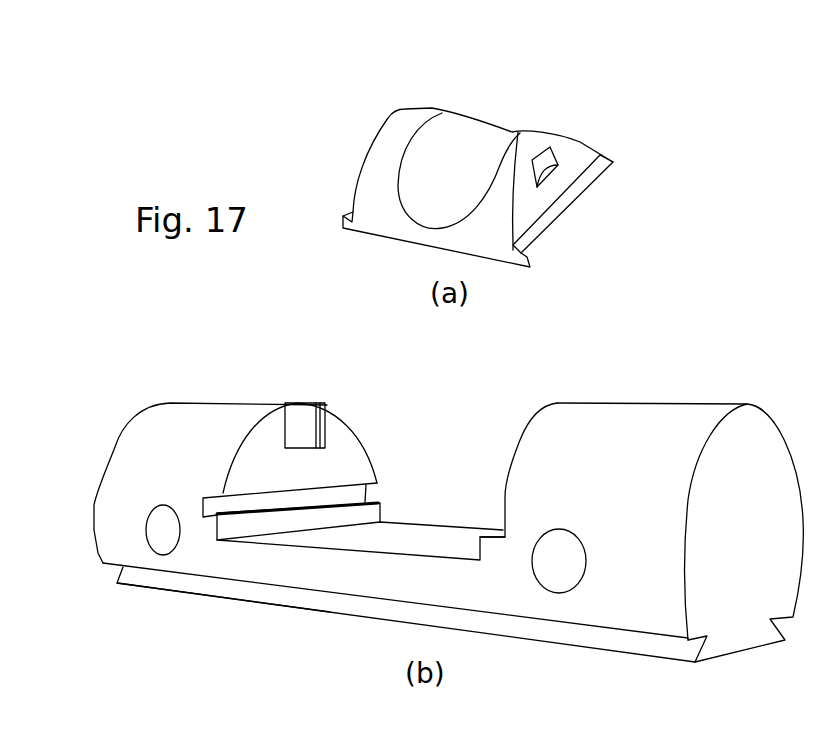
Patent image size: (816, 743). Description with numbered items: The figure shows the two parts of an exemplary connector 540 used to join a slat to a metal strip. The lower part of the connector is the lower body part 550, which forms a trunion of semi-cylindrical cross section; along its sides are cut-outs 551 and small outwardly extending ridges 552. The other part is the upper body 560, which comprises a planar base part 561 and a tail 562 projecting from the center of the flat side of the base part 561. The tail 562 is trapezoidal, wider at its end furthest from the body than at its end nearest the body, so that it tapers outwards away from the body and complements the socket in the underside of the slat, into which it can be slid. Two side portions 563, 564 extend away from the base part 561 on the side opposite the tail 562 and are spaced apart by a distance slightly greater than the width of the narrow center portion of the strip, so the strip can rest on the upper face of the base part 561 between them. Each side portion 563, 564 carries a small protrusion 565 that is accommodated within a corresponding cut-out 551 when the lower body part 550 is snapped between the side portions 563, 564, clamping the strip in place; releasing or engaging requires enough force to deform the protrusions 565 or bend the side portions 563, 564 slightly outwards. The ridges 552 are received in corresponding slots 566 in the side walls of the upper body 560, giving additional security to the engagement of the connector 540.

The connector 540 is at (625, 130).
The lower body part 550 is at (437, 102).
The cut-out 551 is at (387, 120).
The ridge 552 is at (533, 252).
The upper body 560 is at (229, 395).
The base part 561 is at (330, 595).
The tail 562 is at (138, 587).
The side portion 563 is at (353, 425).
The side portion 564 is at (528, 420).
The protrusion 565 is at (304, 406).
The slot 566 is at (205, 496).